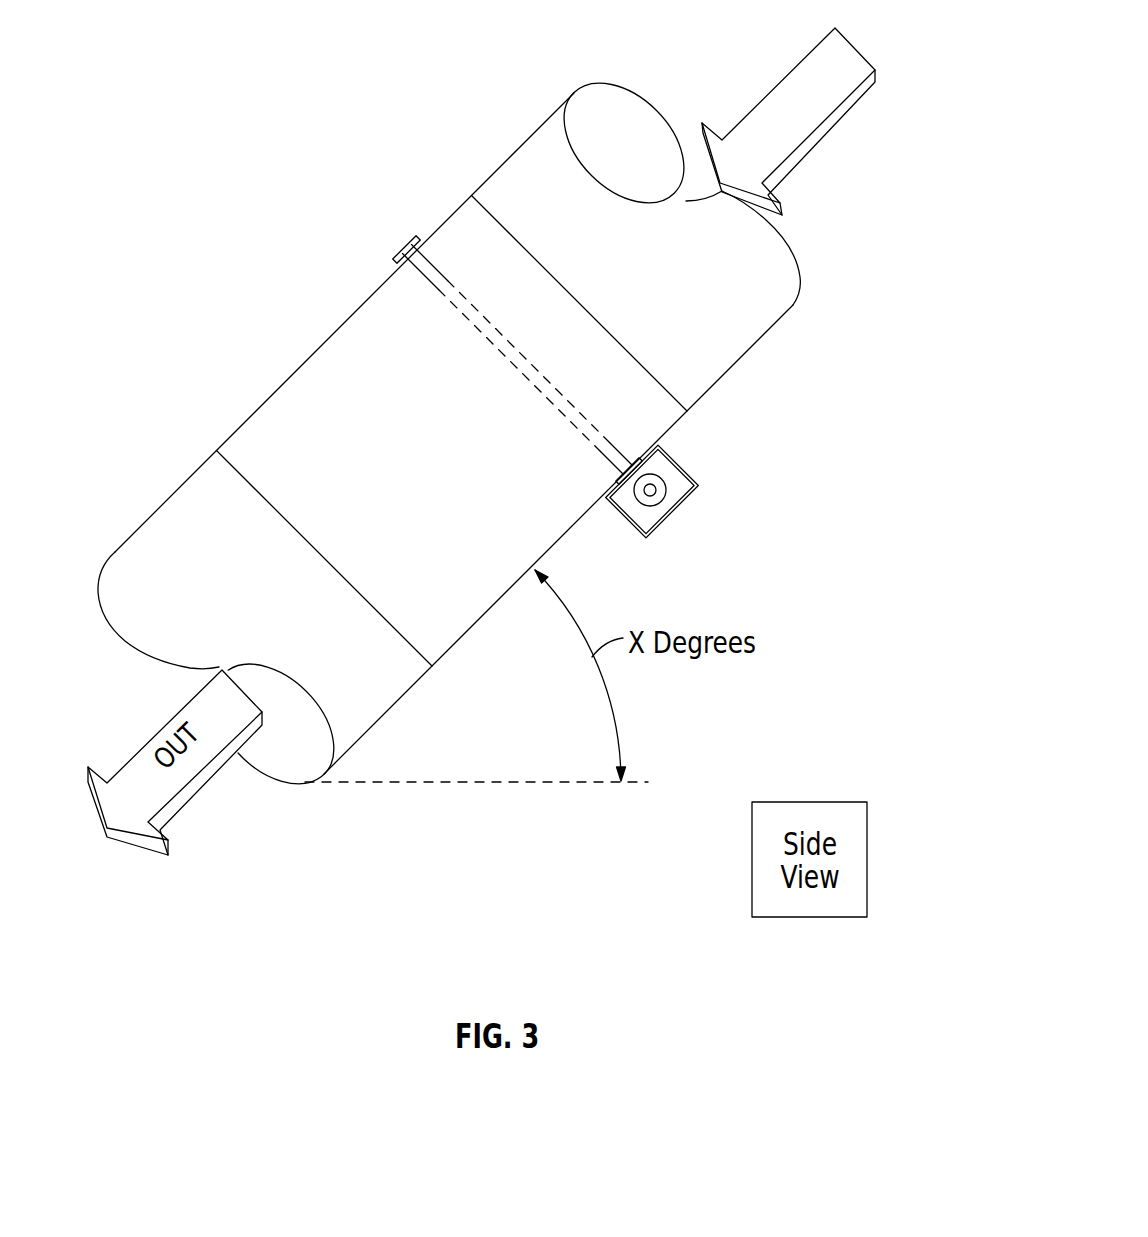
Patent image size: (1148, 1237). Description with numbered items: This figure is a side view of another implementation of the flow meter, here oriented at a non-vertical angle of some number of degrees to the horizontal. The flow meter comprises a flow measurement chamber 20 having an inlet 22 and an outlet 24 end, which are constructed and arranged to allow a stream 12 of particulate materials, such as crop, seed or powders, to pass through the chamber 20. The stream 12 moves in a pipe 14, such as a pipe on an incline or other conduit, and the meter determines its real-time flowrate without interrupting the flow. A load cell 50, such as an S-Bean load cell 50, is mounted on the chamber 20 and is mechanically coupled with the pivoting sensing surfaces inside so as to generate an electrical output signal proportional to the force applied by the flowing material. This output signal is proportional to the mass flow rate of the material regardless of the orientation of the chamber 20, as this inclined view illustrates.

The stream of particulate materials 12 is at (813, 48).
The pipe 14 is at (562, 105).
The flow measurement chamber 20 is at (262, 404).
The inlet end 22 is at (535, 258).
The outlet end 24 is at (253, 483).
The load cell 50 is at (677, 513).